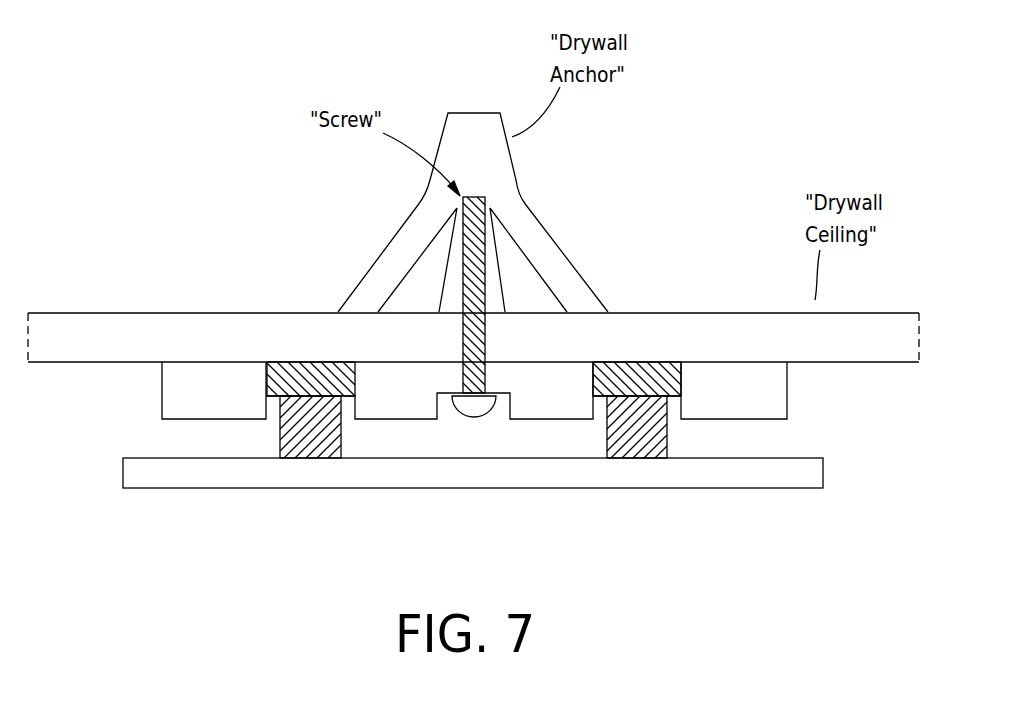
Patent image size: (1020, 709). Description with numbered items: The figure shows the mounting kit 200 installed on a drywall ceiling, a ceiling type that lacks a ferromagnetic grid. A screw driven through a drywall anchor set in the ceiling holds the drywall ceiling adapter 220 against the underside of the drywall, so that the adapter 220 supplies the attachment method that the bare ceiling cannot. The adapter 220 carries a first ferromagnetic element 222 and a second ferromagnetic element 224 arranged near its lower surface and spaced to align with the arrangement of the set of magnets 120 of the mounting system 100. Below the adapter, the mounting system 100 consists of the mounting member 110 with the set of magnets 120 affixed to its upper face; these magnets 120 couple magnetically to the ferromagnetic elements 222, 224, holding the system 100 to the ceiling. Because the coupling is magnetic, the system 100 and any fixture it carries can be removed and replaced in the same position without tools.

The mounting system 100 is at (474, 304).
The mounting kit 200 is at (72, 156).
The drywall ceiling adapter 220 is at (798, 398).
The first ferromagnetic element 222 is at (267, 380).
The second ferromagnetic element 224 is at (657, 370).
The set of magnets 120 is at (600, 432).
The mounting member 110 is at (769, 503).